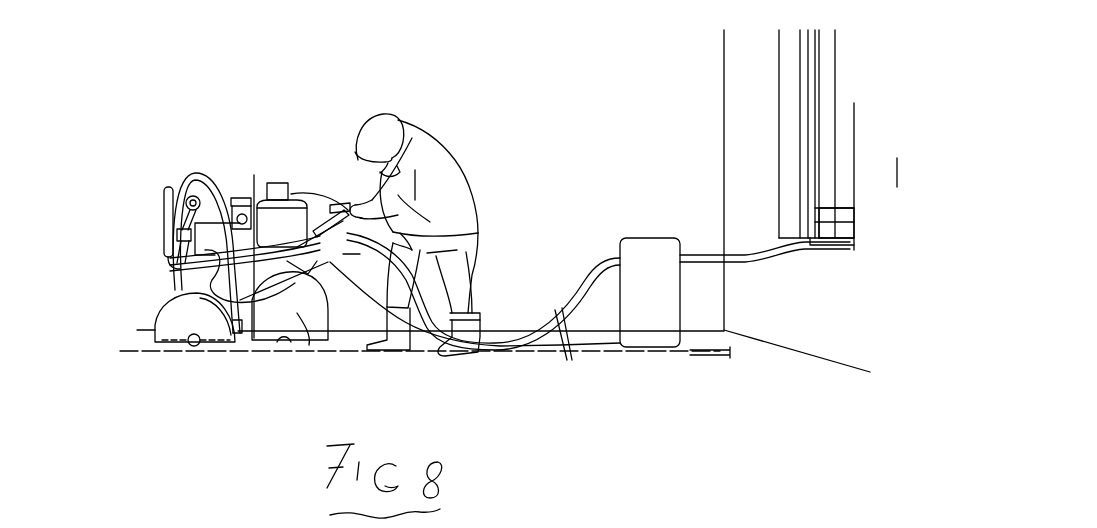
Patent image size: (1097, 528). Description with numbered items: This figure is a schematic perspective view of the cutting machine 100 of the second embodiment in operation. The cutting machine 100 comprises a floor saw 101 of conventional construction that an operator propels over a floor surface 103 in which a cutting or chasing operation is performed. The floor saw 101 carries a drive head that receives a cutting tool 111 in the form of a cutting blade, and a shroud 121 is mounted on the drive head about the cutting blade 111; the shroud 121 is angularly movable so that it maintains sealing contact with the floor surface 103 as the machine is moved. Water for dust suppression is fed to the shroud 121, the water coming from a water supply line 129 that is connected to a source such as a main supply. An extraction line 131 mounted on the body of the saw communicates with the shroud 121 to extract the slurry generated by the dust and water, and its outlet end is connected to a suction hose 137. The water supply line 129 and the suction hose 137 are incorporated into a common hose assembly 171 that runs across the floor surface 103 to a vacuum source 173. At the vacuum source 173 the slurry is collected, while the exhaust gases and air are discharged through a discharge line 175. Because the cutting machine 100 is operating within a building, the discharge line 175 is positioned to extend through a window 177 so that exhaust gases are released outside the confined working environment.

The cutting machine 100 is at (150, 112).
The extraction line 131 is at (198, 170).
The shroud 121 is at (165, 308).
The cutting tool 111 is at (117, 387).
The floor saw 101 is at (283, 393).
The water supply line 129 is at (352, 380).
The suction hose 137 is at (464, 177).
The floor surface 103 is at (587, 340).
The hose assembly 171 is at (590, 410).
The vacuum source 173 is at (637, 248).
The discharge line 175 is at (806, 363).
The window 177 is at (897, 237).